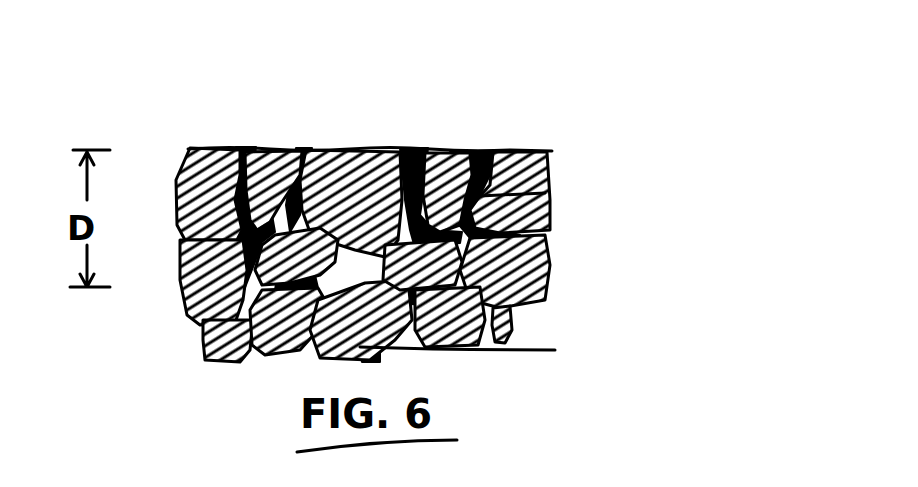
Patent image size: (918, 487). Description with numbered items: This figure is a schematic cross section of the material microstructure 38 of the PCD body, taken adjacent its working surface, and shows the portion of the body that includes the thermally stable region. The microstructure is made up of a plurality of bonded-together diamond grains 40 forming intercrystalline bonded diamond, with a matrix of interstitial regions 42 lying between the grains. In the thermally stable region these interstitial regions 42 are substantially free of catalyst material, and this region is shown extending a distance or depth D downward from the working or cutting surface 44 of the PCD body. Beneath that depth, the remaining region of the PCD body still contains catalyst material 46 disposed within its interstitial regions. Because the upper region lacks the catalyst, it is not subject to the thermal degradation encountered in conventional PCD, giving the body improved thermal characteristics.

The material microstructure 38 is at (430, 217).
The diamond grains 40 is at (281, 147).
The interstitial regions 42 is at (244, 147).
The working or cutting surface 44 is at (477, 150).
The catalyst material 46 is at (485, 353).